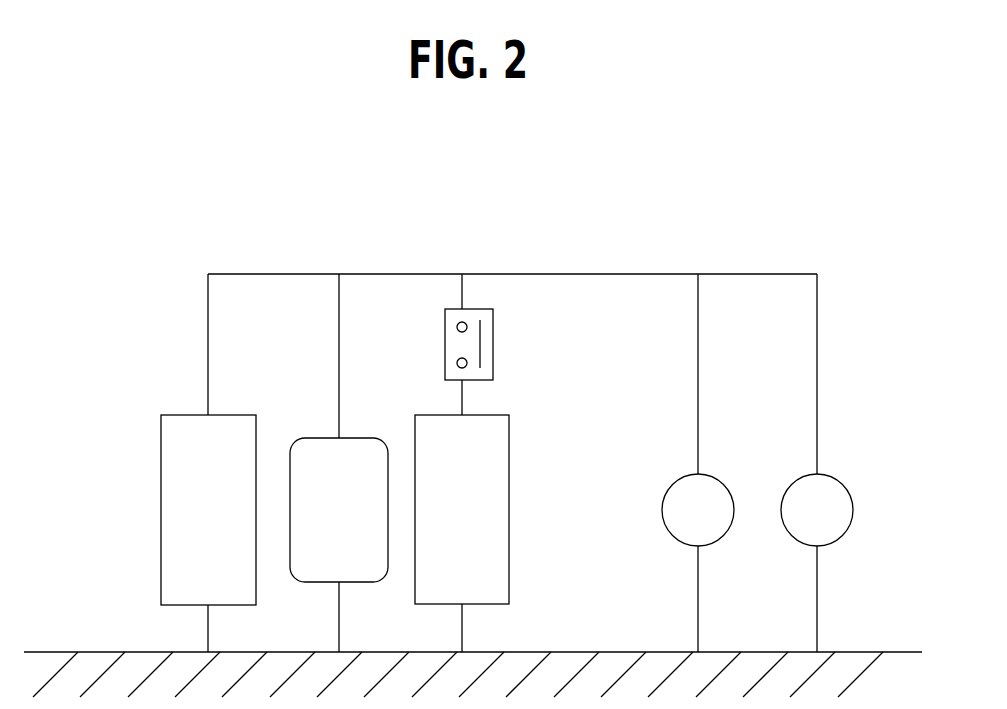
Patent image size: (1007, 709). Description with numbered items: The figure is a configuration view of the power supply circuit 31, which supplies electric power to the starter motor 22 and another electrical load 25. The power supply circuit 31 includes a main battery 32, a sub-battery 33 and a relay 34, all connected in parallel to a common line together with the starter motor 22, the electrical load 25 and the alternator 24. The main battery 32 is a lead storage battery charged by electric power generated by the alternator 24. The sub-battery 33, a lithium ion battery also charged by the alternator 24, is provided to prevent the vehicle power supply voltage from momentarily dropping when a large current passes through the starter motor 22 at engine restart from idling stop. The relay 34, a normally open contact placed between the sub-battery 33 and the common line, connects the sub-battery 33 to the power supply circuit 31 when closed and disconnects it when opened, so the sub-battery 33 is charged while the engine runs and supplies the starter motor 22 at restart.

The starter motor 22 is at (720, 478).
The alternator 24 is at (838, 478).
The electrical load 25 is at (357, 438).
The power supply circuit 31 is at (555, 273).
The main battery 32 is at (232, 415).
The sub-battery 33 is at (509, 458).
The relay 34 is at (493, 333).